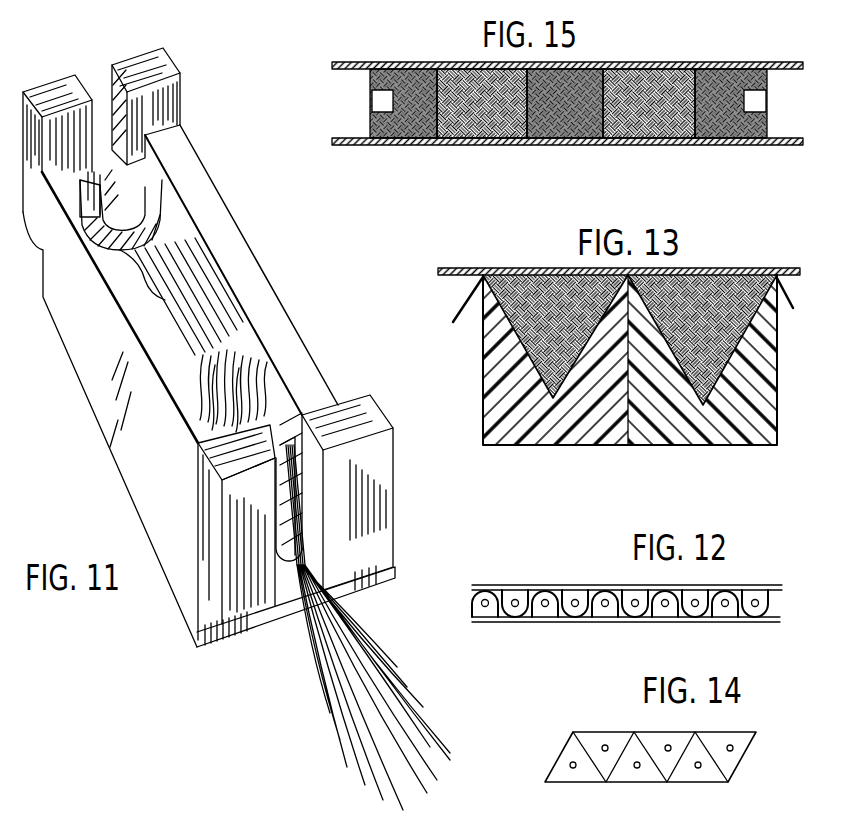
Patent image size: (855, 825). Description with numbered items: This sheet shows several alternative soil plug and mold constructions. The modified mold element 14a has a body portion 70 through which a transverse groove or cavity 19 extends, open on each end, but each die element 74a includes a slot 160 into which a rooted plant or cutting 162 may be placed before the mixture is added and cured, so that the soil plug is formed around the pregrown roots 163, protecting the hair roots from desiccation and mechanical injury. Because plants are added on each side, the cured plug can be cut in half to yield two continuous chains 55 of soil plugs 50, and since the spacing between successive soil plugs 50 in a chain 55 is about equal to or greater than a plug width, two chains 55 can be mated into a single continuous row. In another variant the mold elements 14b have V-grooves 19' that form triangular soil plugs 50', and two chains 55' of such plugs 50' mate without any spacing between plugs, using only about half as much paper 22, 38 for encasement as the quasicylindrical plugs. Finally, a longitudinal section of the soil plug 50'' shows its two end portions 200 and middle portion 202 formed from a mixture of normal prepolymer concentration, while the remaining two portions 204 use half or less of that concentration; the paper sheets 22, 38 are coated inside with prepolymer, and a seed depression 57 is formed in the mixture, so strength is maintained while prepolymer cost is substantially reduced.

In FIG. 11, the modified mold element 14a is at (274, 326).
In FIG. 11, the groove or cavity 19 is at (197, 267).
In FIG. 11, the body portion 70 is at (222, 238).
In FIG. 11, the die element 74a is at (158, 65).
In FIG. 11, the slot 160 is at (107, 87).
In FIG. 11, the pregrown roots 163 is at (263, 372).
In FIG. 11, the rooted plant or cutting 162 is at (317, 572).
In FIG. 15, the paper sheet 38 is at (660, 63).
In FIG. 15, the paper sheet 22 is at (712, 145).
In FIG. 15, the soil plug 50'' is at (568, 134).
In FIG. 15, the end portions 200 is at (403, 70).
In FIG. 15, the middle portion 202 is at (570, 63).
In FIG. 15, the low-prepolymer portions 204 is at (463, 138).
In FIG. 15, the seed depression 57 is at (372, 93).
In FIG. 13, the mold element 14b is at (588, 432).
In FIG. 13, the V-groove 19' is at (619, 340).
In FIG. 13, the triangular soil plug 50' is at (619, 314).
In FIG. 14, the triangular soil plug 50' is at (647, 762).
In FIG. 12, the chain of soil plugs 55 is at (627, 601).
In FIG. 12, the soil plug 50 is at (620, 602).
In FIG. 14, the chain of triangular soil plugs 55' is at (650, 747).